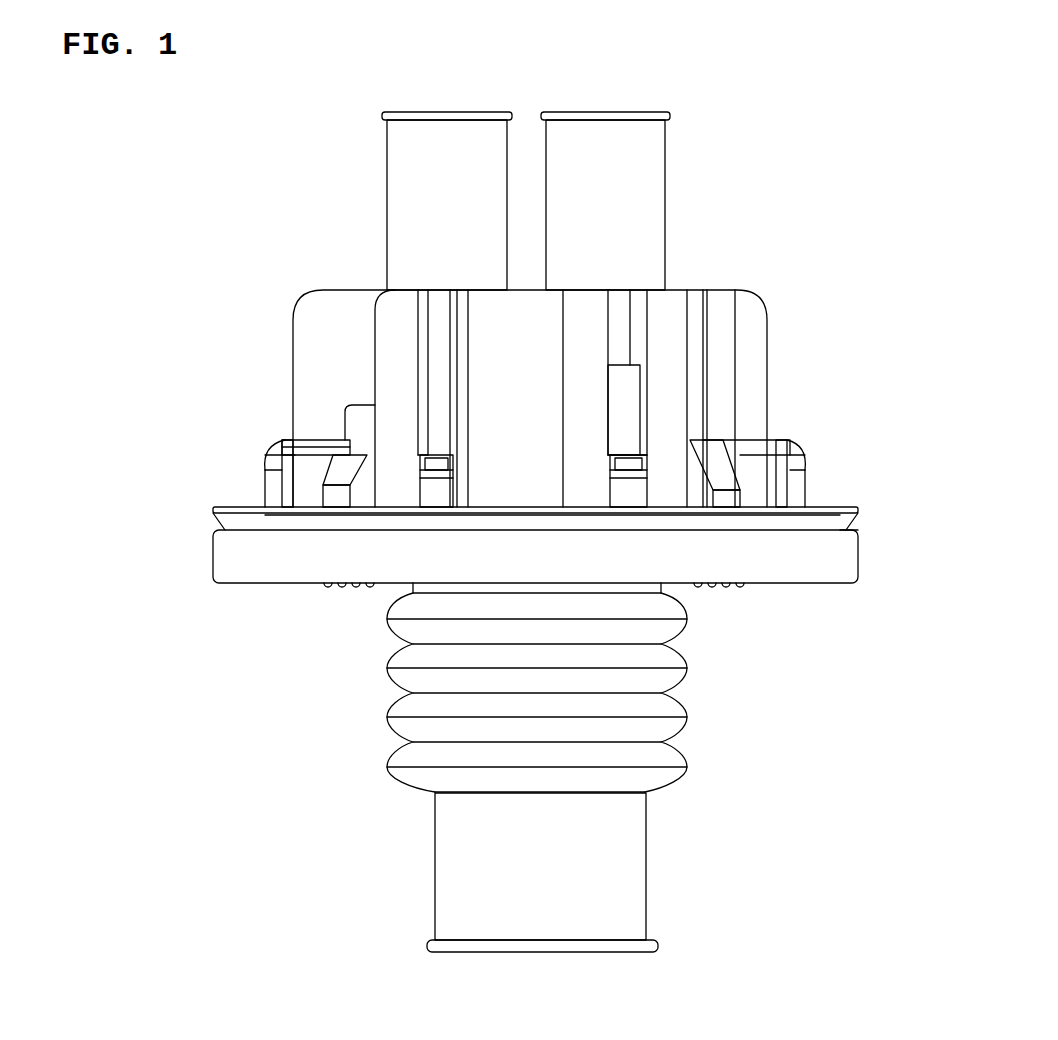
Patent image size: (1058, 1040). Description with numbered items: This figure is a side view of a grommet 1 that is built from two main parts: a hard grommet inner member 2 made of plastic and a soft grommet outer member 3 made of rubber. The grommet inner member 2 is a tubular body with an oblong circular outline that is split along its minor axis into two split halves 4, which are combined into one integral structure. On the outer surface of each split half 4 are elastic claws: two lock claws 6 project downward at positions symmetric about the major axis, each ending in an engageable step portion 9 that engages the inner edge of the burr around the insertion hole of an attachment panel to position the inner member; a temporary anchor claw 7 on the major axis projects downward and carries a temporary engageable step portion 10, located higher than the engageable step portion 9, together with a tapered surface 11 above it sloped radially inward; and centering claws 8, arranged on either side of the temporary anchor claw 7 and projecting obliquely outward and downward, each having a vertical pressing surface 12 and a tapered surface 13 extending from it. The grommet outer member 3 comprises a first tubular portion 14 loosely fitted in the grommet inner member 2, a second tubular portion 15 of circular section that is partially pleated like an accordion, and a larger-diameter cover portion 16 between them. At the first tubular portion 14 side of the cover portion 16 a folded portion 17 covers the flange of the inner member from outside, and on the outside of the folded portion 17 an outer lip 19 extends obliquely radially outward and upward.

The grommet 1 is at (780, 135).
The grommet inner member 2 is at (536, 394).
The grommet outer member 3 is at (690, 767).
The split halves 4 is at (300, 335).
The lock claws 6 is at (345, 440).
The temporary anchor claw 7 is at (265, 452).
The centering claws 8 is at (298, 500).
The engageable step portion 9 is at (338, 495).
The temporary engageable step portion 10 is at (265, 470).
The tapered surface 11 is at (285, 447).
The pressing surface 12 is at (288, 495).
The tapered surface 13 is at (425, 458).
The first tubular portion 14 is at (400, 152).
The second tubular portion 15 is at (633, 835).
The cover portion 16 is at (855, 578).
The folded portion 17 is at (848, 532).
The outer lip 19 is at (522, 522).